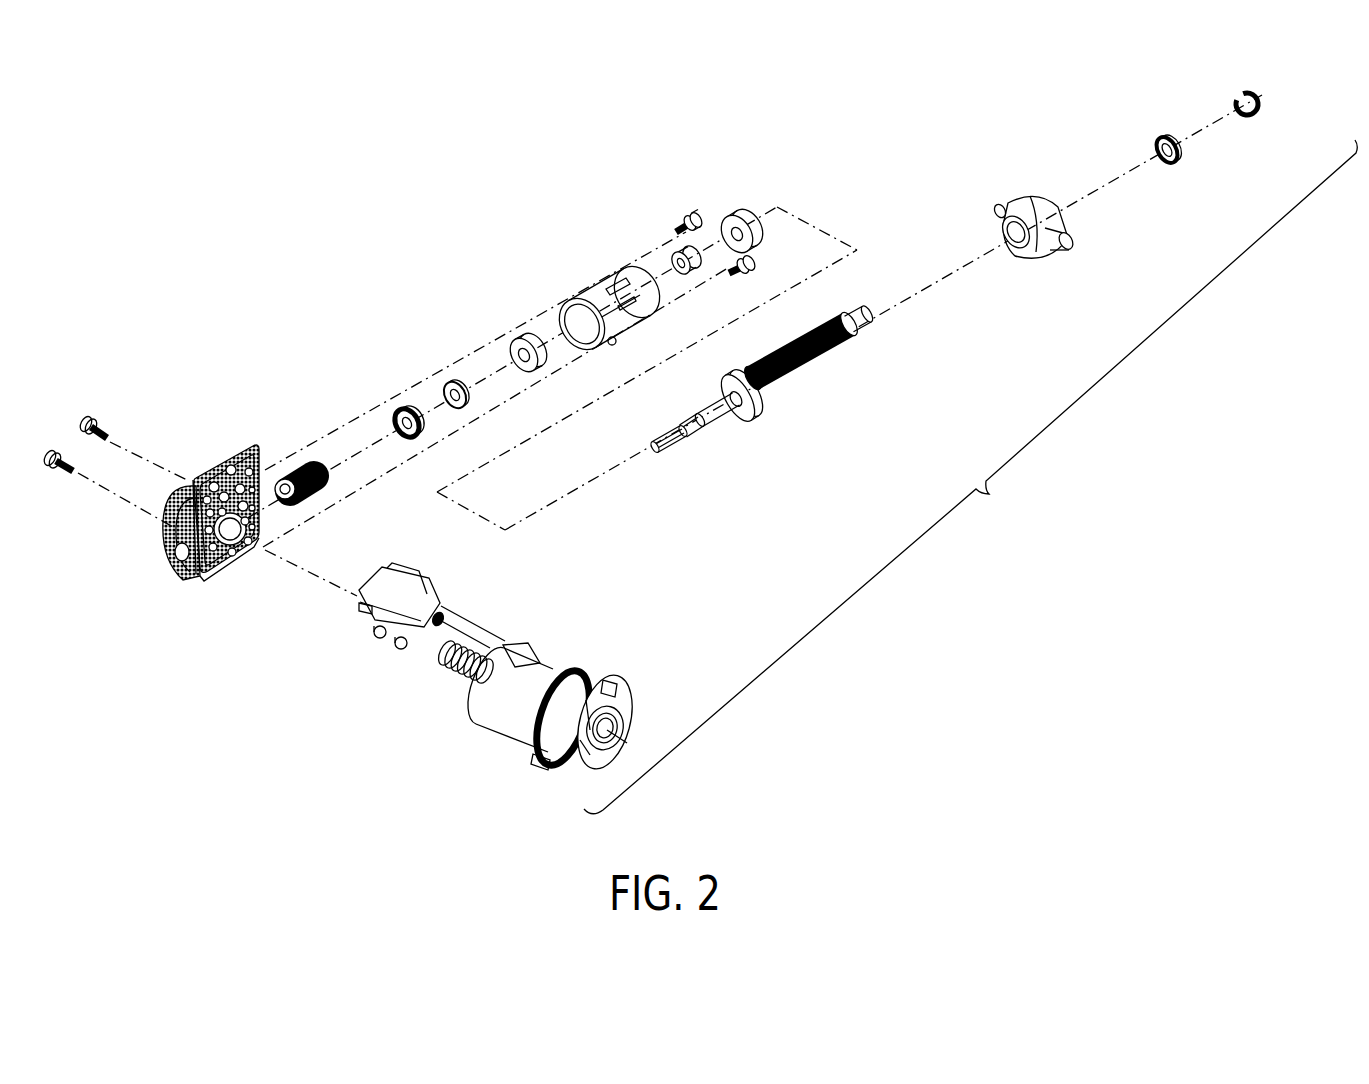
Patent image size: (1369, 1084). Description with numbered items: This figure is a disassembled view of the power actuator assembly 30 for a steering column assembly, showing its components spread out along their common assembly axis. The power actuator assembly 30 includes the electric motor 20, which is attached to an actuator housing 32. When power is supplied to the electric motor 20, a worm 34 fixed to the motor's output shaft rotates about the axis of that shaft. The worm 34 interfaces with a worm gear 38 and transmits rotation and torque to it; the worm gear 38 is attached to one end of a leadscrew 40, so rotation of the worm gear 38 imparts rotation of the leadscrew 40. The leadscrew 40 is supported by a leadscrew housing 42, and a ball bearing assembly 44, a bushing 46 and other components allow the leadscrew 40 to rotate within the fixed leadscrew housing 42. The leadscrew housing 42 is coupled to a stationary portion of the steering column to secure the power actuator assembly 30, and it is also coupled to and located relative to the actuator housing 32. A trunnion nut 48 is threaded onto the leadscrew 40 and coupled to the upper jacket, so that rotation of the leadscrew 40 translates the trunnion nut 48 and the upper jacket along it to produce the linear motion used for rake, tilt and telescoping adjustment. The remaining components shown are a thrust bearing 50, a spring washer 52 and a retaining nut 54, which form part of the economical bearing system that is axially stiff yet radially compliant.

The electric motor 20 is at (598, 690).
The power actuator assembly 30 is at (970, 477).
The actuator housing 32 is at (203, 582).
The worm 34 is at (454, 672).
The worm gear 38 is at (301, 458).
The leadscrew 40 is at (808, 376).
The leadscrew housing 42 is at (606, 292).
The ball bearing assembly 44 is at (710, 188).
The bushing 46 is at (697, 278).
The trunnion nut 48 is at (1030, 205).
The thrust bearing 50 is at (520, 340).
The spring washer 52 is at (447, 385).
The retaining nut 54 is at (403, 405).